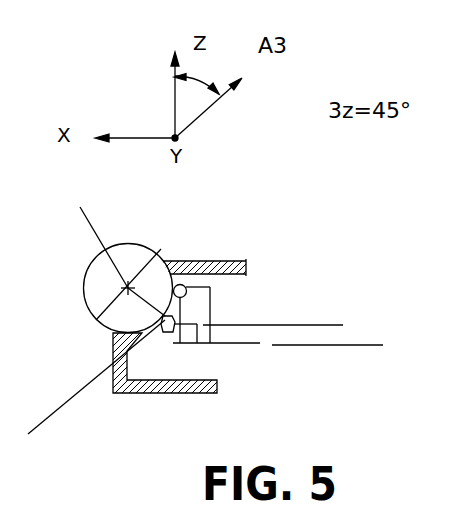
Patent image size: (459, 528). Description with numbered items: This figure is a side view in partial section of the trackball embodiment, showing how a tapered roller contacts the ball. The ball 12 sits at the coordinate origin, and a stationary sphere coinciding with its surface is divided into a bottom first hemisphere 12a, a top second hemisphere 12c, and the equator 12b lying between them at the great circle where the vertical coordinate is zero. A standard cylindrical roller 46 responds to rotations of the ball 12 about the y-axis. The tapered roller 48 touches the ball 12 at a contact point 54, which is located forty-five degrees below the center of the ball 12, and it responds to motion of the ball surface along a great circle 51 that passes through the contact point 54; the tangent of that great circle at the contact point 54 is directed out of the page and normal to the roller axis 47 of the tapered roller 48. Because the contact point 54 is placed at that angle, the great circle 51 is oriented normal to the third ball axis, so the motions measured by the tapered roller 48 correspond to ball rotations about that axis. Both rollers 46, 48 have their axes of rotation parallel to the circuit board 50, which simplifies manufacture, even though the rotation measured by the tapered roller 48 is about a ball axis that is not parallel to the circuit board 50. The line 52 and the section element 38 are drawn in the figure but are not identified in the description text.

The ball 12 is at (95, 272).
The first hemisphere 12a is at (155, 271).
The equator 12b is at (145, 262).
The second hemisphere 12c is at (122, 258).
The housing wall 38 is at (173, 393).
The cylindrical roller 46 is at (205, 268).
The roller axis 47 is at (297, 323).
The tapered roller 48 is at (175, 318).
The circuit board 50 is at (263, 347).
The great circle 51 is at (86, 236).
The inclined axis line 52 is at (40, 422).
The contact point 54 is at (162, 319).